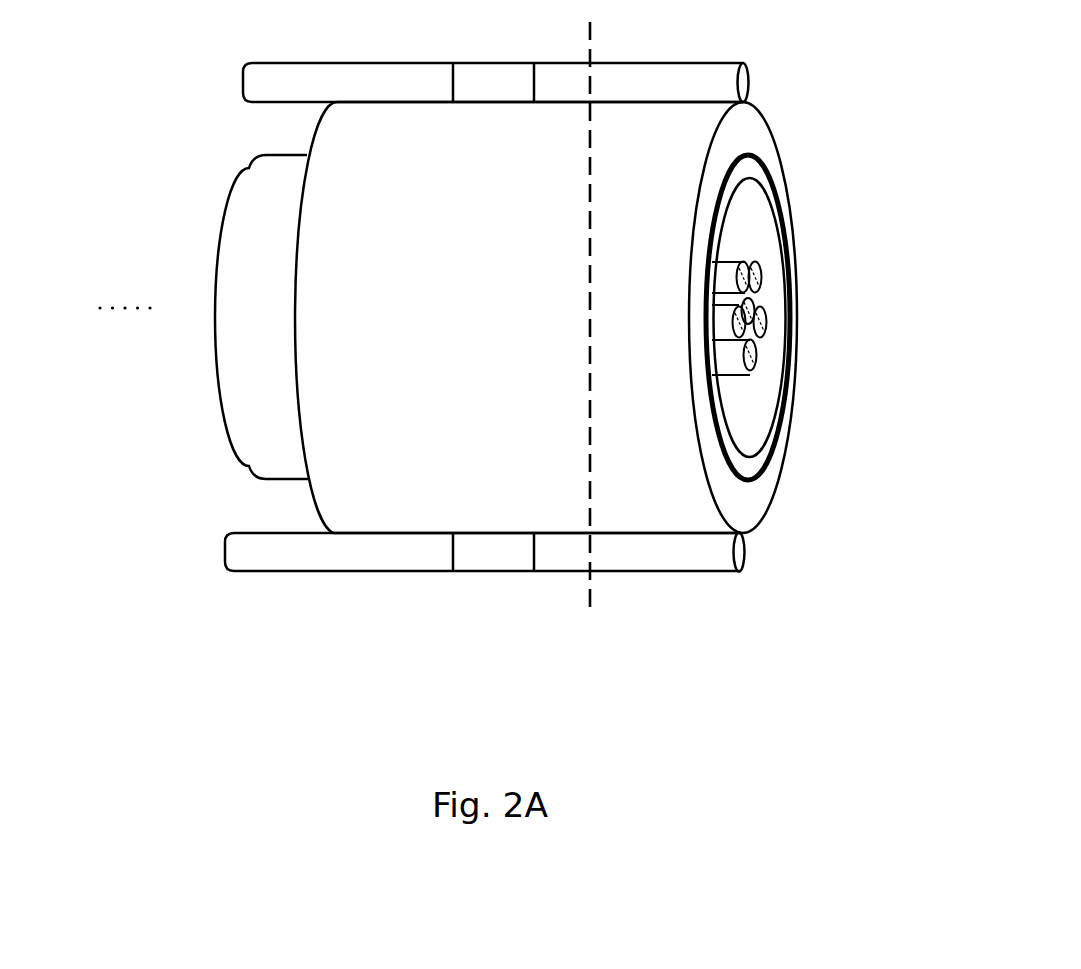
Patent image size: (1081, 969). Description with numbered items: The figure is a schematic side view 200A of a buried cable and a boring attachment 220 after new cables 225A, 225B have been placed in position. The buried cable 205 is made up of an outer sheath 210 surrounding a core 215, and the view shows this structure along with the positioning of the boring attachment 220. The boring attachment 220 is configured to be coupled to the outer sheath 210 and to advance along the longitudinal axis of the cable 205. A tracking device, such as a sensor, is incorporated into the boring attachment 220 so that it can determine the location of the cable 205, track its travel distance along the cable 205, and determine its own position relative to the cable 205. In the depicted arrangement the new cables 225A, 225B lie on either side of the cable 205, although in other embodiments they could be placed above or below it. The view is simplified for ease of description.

The side view 200A is at (575, 392).
The cable 205 is at (634, 316).
The outer sheath 210 is at (752, 155).
The core 215 is at (835, 317).
The boring attachment 220 is at (788, 204).
The new cable 225A is at (750, 82).
The new cable 225B is at (745, 551).